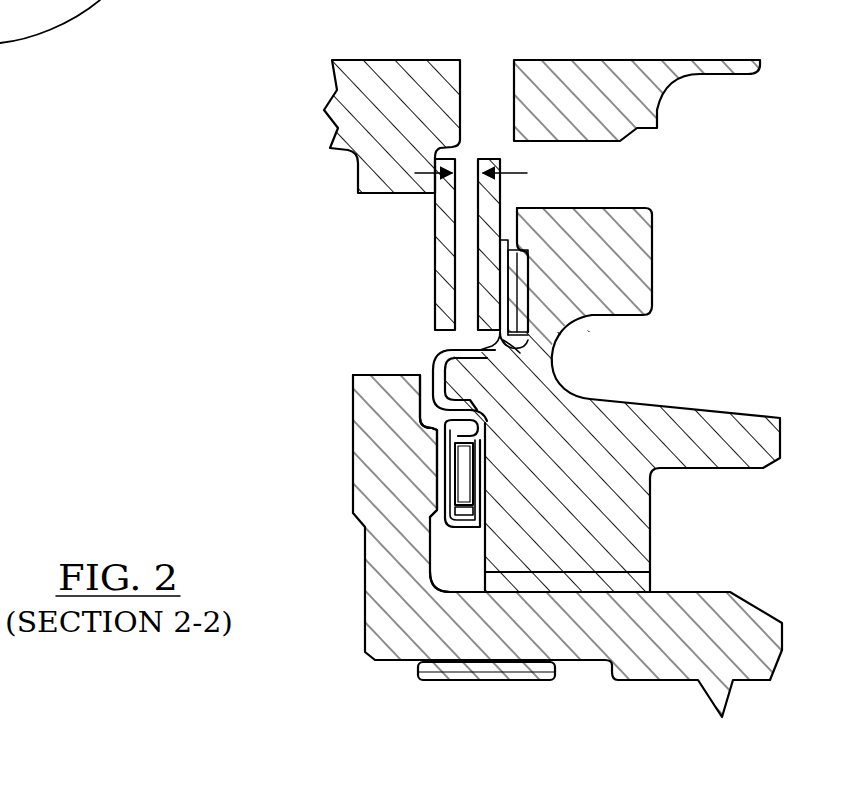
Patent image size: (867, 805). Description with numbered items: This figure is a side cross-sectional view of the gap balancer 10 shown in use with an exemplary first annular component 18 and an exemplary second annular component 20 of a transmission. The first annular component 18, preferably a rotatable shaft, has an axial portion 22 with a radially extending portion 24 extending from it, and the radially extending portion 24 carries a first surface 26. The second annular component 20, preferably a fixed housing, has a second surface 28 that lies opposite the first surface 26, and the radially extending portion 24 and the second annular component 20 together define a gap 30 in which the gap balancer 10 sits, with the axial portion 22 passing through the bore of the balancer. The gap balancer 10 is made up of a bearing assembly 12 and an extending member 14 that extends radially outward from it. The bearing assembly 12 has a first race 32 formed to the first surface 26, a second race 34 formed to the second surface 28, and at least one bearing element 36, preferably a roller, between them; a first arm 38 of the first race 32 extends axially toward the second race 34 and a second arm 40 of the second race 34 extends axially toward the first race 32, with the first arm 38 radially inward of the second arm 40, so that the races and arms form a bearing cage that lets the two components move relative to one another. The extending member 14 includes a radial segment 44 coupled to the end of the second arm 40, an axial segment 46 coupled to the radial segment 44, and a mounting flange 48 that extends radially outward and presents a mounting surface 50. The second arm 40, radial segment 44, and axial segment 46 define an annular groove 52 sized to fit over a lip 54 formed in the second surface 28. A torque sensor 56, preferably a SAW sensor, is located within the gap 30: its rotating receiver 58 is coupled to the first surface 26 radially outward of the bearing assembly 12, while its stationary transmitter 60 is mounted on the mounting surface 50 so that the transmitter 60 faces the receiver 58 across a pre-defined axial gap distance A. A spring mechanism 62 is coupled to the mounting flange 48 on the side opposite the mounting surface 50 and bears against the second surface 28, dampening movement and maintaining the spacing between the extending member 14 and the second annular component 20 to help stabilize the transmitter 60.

The gap balancer 10 is at (378, 323).
The bearing assembly 12 is at (492, 486).
The extending member 14 is at (505, 362).
The first annular component 18 is at (410, 87).
The second annular component 20 is at (572, 85).
The axial portion 22 is at (580, 642).
The radially extending portion 24 is at (368, 395).
The first surface 26 is at (468, 78).
The second surface 28 is at (499, 78).
The gap 30 is at (452, 580).
The first race 32 is at (443, 457).
The second race 34 is at (475, 450).
The bearing element 36 is at (457, 467).
The first arm 38 is at (485, 537).
The second arm 40 is at (473, 412).
The radial segment 44 is at (435, 373).
The axial segment 46 is at (483, 347).
The mounting flange 48 is at (505, 267).
The mounting surface 50 is at (493, 281).
The annular groove 52 is at (494, 365).
The lip 54 is at (460, 382).
The torque sensor 56 is at (396, 222).
The receiver 58 is at (440, 210).
The transmitter 60 is at (488, 199).
The spring mechanism 62 is at (517, 312).